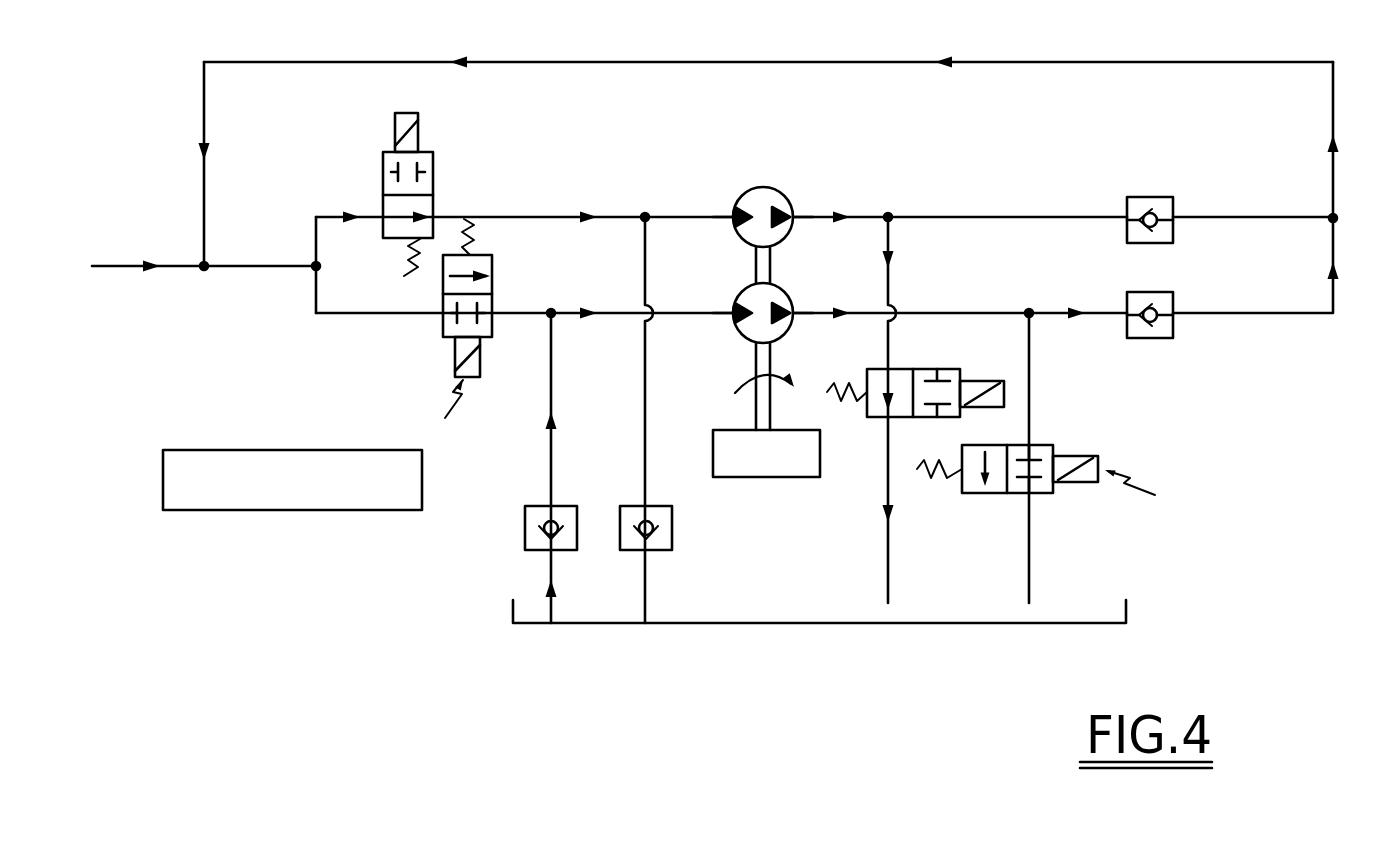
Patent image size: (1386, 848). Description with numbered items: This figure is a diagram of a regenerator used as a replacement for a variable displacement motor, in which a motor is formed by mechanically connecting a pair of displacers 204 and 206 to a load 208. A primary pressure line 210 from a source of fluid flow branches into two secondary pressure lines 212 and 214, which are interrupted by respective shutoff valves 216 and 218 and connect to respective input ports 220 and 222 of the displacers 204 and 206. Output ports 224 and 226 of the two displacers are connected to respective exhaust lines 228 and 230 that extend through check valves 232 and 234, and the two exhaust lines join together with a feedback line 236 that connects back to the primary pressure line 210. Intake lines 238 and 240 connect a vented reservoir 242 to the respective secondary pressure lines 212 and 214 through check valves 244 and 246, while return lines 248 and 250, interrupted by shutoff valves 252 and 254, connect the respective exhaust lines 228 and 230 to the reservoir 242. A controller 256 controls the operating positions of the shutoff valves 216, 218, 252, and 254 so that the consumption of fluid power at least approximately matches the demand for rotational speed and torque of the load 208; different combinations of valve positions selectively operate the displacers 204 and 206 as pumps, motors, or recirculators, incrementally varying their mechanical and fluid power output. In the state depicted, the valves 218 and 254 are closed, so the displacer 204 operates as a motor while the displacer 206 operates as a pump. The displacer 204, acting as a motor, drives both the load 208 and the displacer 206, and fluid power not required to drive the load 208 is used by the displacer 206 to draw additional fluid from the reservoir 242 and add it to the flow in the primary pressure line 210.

The displacer 204 is at (763, 187).
The displacer 206 is at (755, 340).
The load 208 is at (770, 478).
The primary pressure line 210 is at (157, 267).
The secondary pressure line 212 is at (612, 216).
The secondary pressure line 214 is at (605, 312).
The shutoff valve 216 is at (383, 166).
The shutoff valve 218 is at (443, 330).
The input port 220 is at (733, 214).
The input port 222 is at (735, 310).
The output port 224 is at (793, 214).
The output port 226 is at (793, 310).
The exhaust line 228 is at (1056, 216).
The exhaust line 230 is at (945, 312).
The check valve 232 is at (1174, 200).
The check valve 234 is at (1174, 337).
The feedback line 236 is at (893, 62).
The intake line 238 is at (645, 377).
The intake line 240 is at (551, 372).
The vented reservoir 242 is at (750, 624).
The check valve 244 is at (674, 544).
The check valve 246 is at (525, 544).
The return line 248 is at (888, 545).
The return line 250 is at (1030, 558).
The shutoff valve 252 is at (922, 369).
The shutoff valve 254 is at (1038, 445).
The controller 256 is at (247, 450).